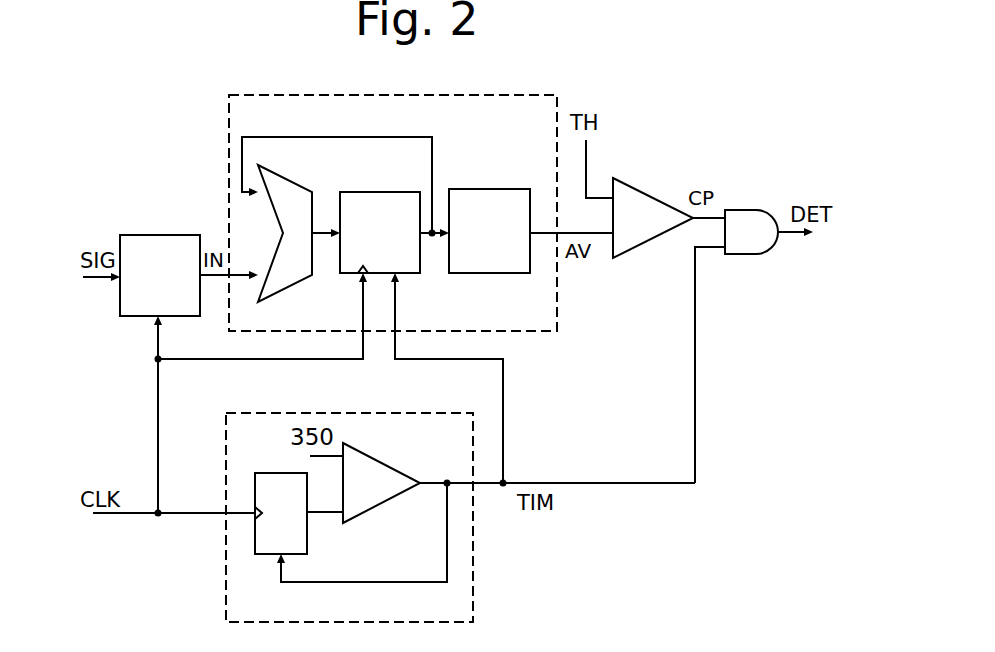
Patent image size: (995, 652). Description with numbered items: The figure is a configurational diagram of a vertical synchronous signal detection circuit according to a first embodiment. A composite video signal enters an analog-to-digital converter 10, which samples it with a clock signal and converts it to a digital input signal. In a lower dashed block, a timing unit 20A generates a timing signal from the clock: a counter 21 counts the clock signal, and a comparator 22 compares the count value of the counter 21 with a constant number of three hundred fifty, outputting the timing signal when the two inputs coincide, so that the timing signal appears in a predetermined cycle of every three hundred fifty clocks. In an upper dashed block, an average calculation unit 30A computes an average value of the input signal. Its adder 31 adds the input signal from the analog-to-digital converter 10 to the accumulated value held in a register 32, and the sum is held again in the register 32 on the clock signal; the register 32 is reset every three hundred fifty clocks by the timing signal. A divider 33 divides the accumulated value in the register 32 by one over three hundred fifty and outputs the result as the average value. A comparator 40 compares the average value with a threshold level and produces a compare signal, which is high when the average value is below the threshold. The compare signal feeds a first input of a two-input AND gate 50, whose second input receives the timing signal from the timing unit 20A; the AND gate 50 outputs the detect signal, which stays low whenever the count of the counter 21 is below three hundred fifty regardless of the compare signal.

The analog-to-digital converter 10 is at (153, 235).
The timing unit 20A is at (225, 473).
The counter 21 is at (260, 555).
The comparator 22 is at (383, 464).
The average calculation unit 30A is at (228, 138).
The adder 31 is at (283, 290).
The register 32 is at (356, 192).
The divider 33 is at (479, 189).
The comparator 40 is at (642, 192).
The AND gate 50 is at (740, 210).